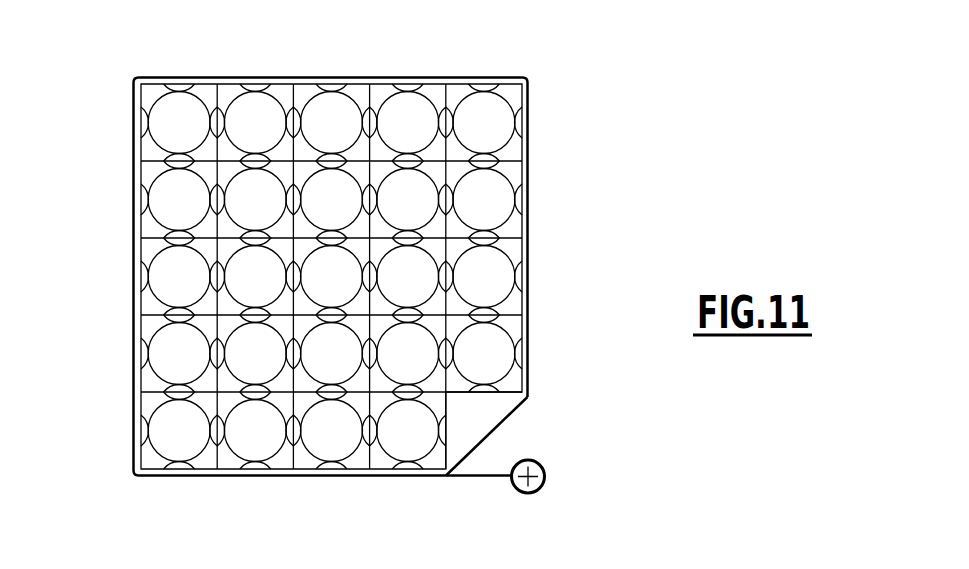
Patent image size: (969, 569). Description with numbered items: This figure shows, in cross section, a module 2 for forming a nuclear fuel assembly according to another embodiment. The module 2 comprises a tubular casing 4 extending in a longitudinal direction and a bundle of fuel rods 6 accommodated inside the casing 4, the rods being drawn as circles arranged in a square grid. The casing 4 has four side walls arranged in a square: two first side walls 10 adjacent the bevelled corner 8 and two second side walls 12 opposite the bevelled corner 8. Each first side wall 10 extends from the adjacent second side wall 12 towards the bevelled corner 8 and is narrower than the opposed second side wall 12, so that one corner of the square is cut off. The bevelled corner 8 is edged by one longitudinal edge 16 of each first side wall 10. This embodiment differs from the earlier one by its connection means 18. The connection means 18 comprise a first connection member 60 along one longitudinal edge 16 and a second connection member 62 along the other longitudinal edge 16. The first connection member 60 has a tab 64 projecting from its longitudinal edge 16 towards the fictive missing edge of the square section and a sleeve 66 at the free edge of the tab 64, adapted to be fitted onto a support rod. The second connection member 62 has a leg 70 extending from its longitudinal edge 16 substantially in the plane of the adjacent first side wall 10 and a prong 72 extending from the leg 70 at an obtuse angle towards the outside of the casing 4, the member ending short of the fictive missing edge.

The module 2 is at (112, 75).
The tubular casing 4 is at (106, 302).
The fuel rods 6 is at (490, 196).
The bevelled corner 8 is at (555, 441).
The first side walls 10 is at (528, 207).
The second side walls 12 is at (247, 84).
The longitudinal edge 16 is at (528, 397).
The connection means 18 is at (682, 462).
The first connection member 60 is at (558, 509).
The second connection member 62 is at (645, 405).
The tab 64 is at (480, 478).
The sleeve 66 is at (545, 477).
The leg 70 is at (529, 403).
The prong 72 is at (529, 405).